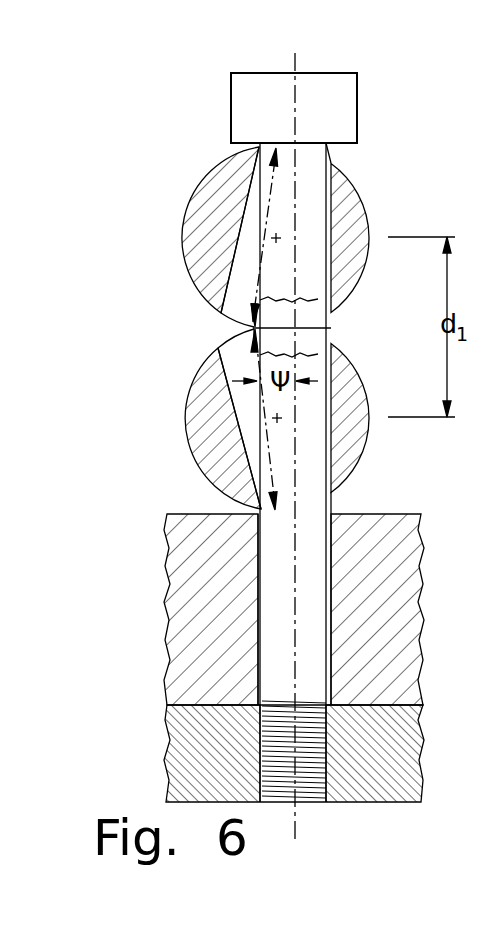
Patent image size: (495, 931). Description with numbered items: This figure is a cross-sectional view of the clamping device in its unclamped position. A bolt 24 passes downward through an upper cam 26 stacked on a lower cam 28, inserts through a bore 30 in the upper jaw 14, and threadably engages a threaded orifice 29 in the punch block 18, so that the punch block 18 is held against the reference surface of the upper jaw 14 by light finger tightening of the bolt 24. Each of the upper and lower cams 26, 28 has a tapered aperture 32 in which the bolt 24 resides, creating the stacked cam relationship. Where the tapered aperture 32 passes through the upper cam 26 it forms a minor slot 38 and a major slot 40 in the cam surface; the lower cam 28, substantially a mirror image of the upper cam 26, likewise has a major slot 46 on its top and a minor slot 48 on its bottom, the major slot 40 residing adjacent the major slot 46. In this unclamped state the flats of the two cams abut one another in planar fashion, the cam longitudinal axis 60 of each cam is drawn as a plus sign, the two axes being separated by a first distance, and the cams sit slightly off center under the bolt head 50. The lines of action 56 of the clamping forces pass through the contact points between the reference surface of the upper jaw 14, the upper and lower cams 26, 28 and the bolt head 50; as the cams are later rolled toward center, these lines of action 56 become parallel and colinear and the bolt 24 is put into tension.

The upper jaw 14 is at (421, 552).
The punch block 18 is at (421, 735).
The bolt 24 is at (310, 603).
The upper cam 26 is at (360, 216).
The lower cam 28 is at (360, 443).
The threaded orifice 29 is at (310, 812).
The bore 30 is at (345, 629).
The tapered aperture 32 is at (233, 272).
The minor slot 38 is at (343, 148).
The major slot 40 is at (338, 327).
The major slot 46 is at (219, 340).
The minor slot 48 is at (345, 496).
The bolt head 50 is at (320, 73).
The lines of action 56 is at (251, 328).
The washer sphere center 60 is at (283, 236).